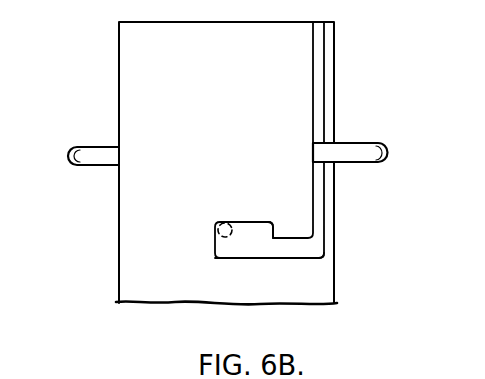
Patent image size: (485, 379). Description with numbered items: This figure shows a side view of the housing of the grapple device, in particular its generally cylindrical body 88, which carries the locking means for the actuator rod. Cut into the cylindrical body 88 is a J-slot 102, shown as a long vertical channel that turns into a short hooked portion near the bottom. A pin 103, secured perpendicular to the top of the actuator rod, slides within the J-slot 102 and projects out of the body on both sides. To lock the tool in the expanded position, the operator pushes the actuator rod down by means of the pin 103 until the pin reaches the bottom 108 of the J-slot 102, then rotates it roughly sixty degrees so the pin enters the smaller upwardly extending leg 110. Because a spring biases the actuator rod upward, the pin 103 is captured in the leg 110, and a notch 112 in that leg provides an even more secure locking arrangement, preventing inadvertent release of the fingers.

The cylindrical body 88 is at (120, 62).
The J-slot 102 is at (317, 60).
The pin 103 is at (357, 148).
The bottom of the J-slot 108 is at (270, 260).
The smaller upwardly extending leg 110 is at (243, 221).
The notch 112 is at (276, 229).